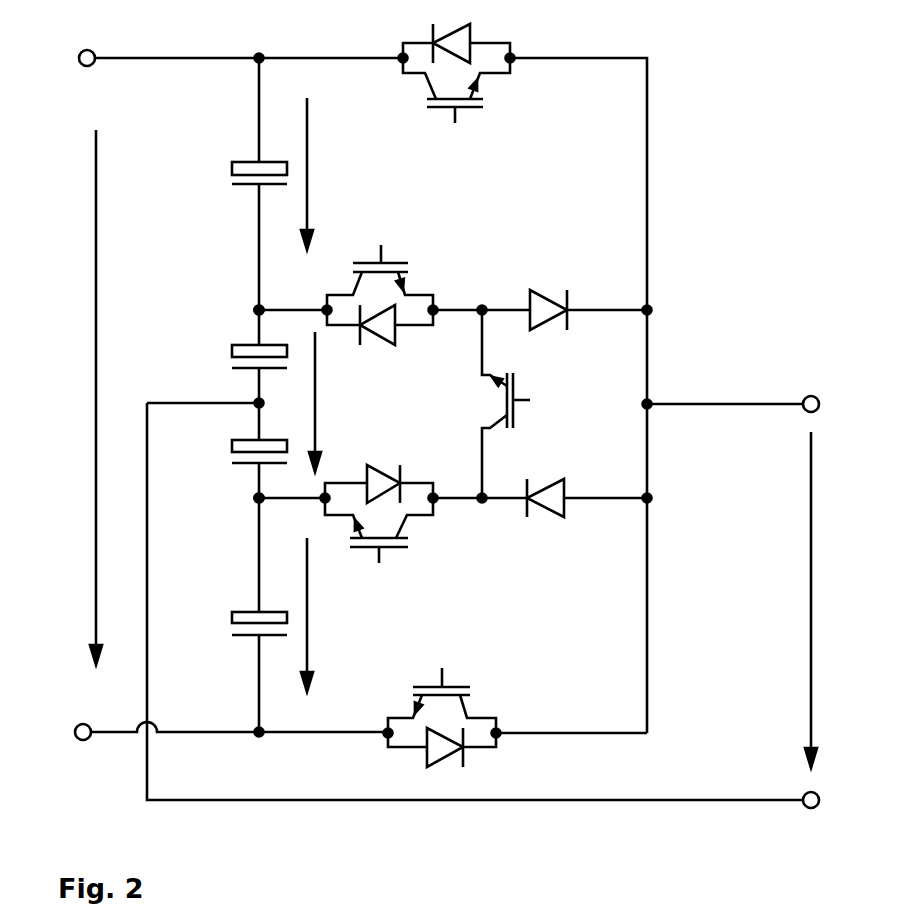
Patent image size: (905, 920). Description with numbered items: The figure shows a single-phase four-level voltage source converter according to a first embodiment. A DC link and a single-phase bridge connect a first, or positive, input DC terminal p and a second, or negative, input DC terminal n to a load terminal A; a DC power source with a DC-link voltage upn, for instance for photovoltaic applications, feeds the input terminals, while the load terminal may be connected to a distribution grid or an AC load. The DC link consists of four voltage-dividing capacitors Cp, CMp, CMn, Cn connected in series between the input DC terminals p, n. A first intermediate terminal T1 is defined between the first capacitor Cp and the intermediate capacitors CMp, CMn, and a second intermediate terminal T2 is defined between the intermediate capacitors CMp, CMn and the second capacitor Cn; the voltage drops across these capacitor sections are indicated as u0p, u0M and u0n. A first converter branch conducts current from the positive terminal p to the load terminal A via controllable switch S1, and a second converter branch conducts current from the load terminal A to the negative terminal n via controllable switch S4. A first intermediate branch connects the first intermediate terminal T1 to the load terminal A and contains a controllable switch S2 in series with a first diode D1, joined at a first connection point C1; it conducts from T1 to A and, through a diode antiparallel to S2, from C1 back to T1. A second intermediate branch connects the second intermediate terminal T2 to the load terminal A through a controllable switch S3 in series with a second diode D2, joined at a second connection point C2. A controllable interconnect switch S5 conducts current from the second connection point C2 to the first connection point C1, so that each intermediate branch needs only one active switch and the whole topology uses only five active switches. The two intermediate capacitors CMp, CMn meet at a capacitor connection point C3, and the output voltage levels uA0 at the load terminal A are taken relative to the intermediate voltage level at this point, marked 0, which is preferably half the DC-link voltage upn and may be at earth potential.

The first input DC terminal p is at (66, 59).
The second input DC terminal n is at (69, 732).
The load terminal A is at (826, 405).
The intermediate voltage level reference 0 is at (497, 613).
The controllable switch S1 is at (457, 98).
The controllable switch S2 is at (380, 274).
The controllable switch S3 is at (379, 543).
The controllable switch S4 is at (442, 708).
The controllable interconnect switch S5 is at (531, 404).
The first diode D1 is at (557, 283).
The second diode D2 is at (565, 531).
The first capacitor Cp is at (235, 185).
The intermediate capacitor CMp is at (222, 359).
The intermediate capacitor CMn is at (221, 452).
The second capacitor Cn is at (234, 626).
The first intermediate terminal T1 is at (233, 311).
The second intermediate terminal T2 is at (233, 511).
The first connection point C1 is at (489, 286).
The second connection point C2 is at (489, 528).
The capacitor connection point C3 is at (227, 413).
The DC-link voltage upn is at (61, 397).
The voltage across first capacitor u0p is at (339, 174).
The voltage across intermediate capacitors u0M is at (347, 402).
The voltage across second capacitor u0n is at (340, 615).
The load terminal voltage uA0 is at (777, 600).